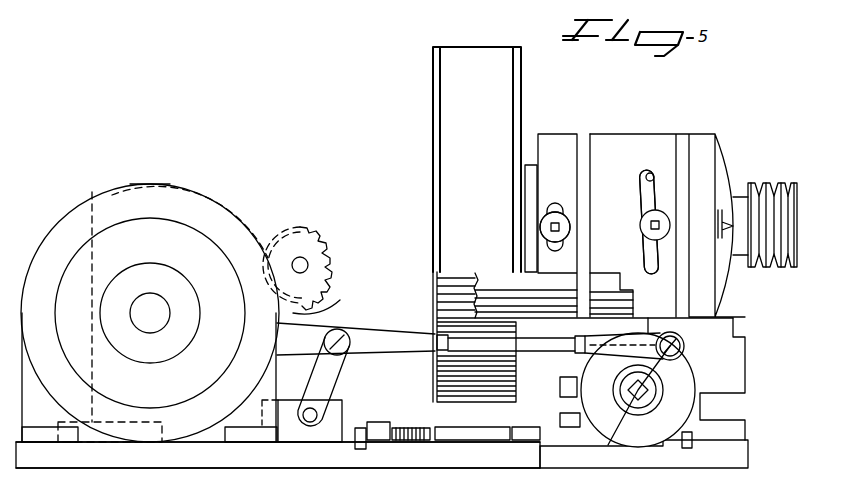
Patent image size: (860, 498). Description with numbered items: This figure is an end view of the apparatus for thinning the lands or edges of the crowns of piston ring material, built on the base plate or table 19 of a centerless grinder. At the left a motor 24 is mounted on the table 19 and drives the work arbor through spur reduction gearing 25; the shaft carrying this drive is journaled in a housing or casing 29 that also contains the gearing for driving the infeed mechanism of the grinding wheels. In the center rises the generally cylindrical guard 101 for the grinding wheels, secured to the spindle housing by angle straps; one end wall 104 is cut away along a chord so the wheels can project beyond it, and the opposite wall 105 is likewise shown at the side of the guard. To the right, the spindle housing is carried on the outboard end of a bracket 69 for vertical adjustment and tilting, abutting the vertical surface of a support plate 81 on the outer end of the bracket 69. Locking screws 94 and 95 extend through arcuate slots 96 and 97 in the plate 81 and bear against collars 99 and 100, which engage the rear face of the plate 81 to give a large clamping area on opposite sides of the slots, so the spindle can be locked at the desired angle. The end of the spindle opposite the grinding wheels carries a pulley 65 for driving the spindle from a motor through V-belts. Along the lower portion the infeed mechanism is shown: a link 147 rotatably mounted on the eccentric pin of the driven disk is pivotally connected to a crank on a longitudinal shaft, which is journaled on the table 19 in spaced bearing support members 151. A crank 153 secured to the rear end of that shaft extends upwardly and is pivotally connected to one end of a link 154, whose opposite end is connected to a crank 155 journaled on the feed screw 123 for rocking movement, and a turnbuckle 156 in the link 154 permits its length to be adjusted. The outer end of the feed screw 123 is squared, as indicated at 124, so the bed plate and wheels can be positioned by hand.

The base plate or table 19 is at (205, 445).
The motor 24 is at (73, 215).
The spur reduction gearing 25 is at (339, 231).
The housing or casing 29 is at (323, 298).
The pulley 65 is at (775, 183).
The bracket 69 is at (585, 155).
The support plate 81 is at (628, 148).
The locking screw 94 is at (566, 228).
The locking screw 95 is at (641, 226).
The arcuate slot 96 is at (556, 212).
The arcuate slot 97 is at (652, 170).
The collar 99 is at (555, 239).
The collar 100 is at (648, 242).
The guard 101 is at (474, 60).
The end wall 104 is at (522, 104).
The column guide 105 is at (437, 118).
The feed screw 123 is at (641, 396).
The squared end 124 is at (644, 454).
The link 147 is at (333, 320).
The bearing support member 151 is at (345, 415).
The crank 153 is at (330, 380).
The link 154 is at (396, 332).
The crank 155 is at (681, 360).
The turnbuckle 156 is at (442, 348).